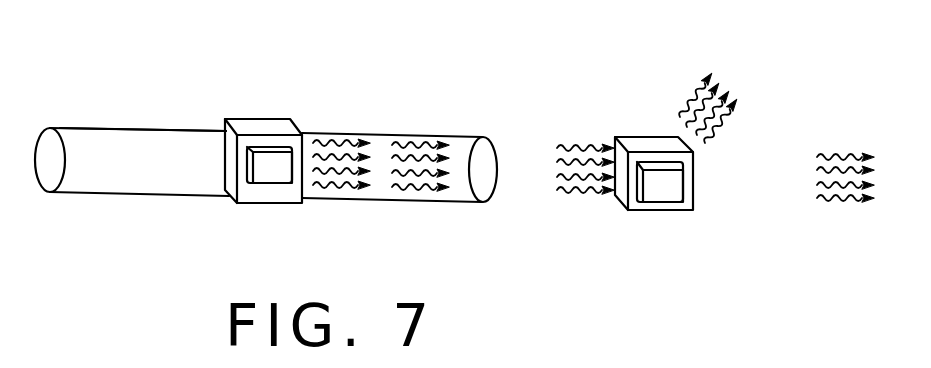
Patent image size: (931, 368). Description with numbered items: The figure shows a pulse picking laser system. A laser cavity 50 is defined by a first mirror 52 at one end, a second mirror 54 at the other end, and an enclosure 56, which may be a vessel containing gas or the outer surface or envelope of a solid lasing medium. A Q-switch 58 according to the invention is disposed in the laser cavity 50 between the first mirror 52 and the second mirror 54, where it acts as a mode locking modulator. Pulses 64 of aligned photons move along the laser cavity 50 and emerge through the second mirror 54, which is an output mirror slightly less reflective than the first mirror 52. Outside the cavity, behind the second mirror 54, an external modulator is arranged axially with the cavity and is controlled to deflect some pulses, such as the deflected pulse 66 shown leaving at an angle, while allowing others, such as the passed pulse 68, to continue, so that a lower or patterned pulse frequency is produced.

The laser cavity 50 is at (147, 133).
The first mirror 52 is at (43, 150).
The second mirror 54 is at (493, 150).
The enclosure 56 is at (95, 127).
The Q-switch 58 is at (265, 126).
The pulses 64 is at (352, 140).
The deflected pulse 66 is at (648, 125).
The passed pulse 68 is at (838, 203).